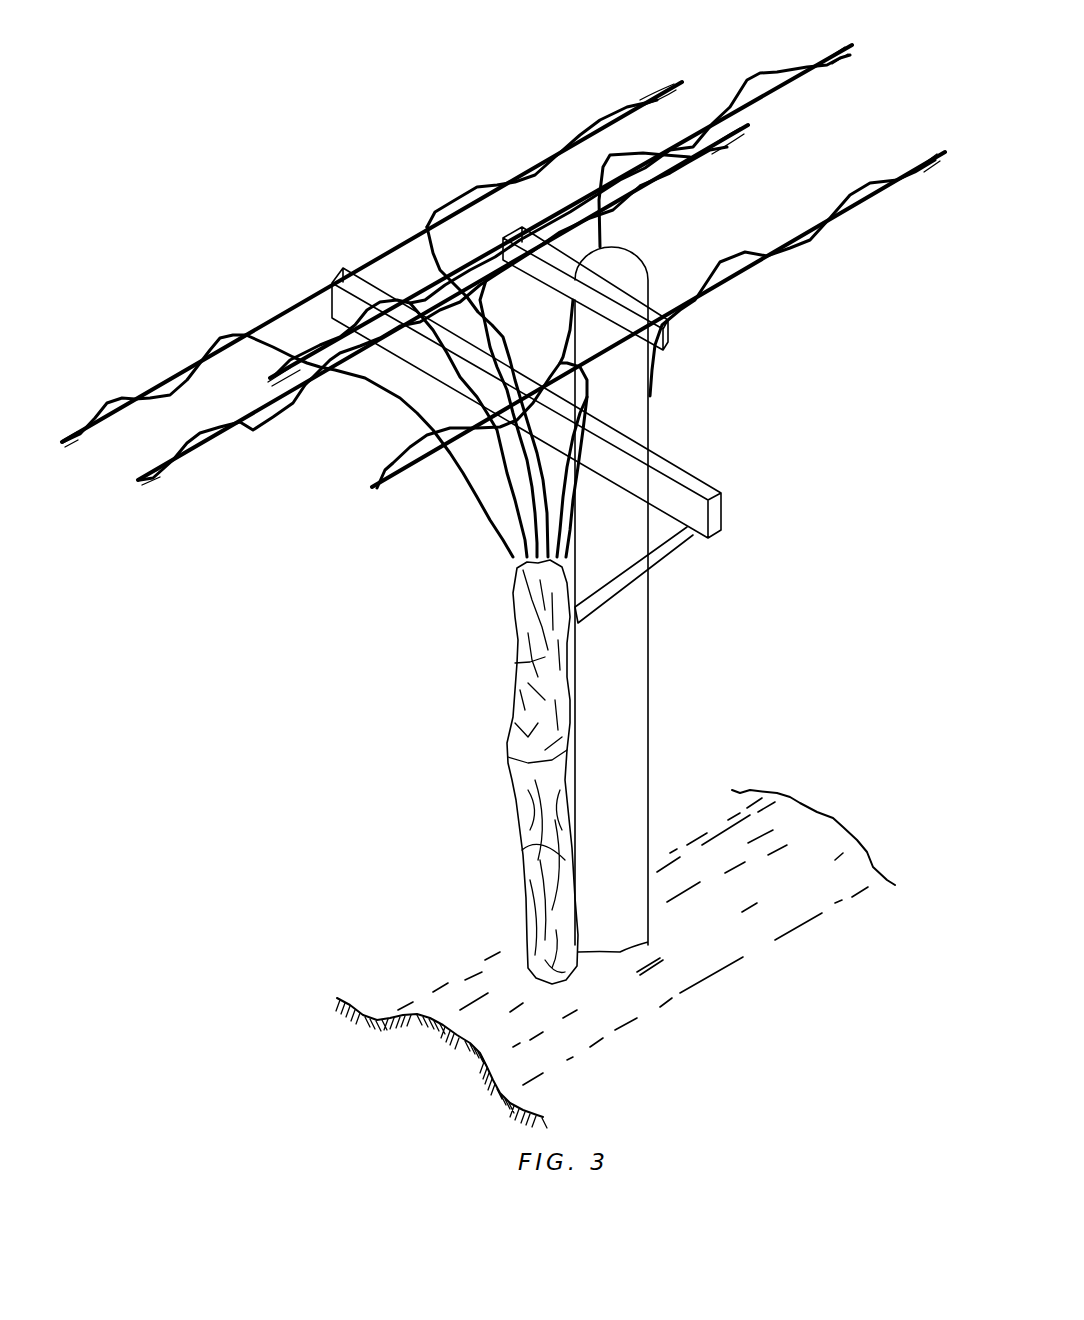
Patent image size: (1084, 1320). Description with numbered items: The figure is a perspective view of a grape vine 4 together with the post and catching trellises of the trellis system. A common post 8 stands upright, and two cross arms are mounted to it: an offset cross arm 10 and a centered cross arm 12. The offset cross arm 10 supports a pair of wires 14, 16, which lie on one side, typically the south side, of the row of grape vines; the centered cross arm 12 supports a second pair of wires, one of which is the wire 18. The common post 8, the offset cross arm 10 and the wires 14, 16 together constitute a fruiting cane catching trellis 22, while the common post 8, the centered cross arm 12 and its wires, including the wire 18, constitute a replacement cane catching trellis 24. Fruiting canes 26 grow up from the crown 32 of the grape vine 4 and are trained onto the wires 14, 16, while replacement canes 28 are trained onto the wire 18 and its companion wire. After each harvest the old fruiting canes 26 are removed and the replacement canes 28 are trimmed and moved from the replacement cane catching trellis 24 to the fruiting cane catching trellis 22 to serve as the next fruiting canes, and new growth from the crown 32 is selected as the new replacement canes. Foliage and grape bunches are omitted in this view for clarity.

The grape vine 4 is at (460, 830).
The common post 8 is at (649, 648).
The offset cross arm 10 is at (663, 462).
The centered cross arm 12 is at (648, 300).
The wire 14 is at (393, 246).
The wire 16 is at (495, 304).
The wire 18 is at (770, 97).
The fruiting cane catching trellis 22 is at (304, 278).
The replacement cane catching trellis 24 is at (718, 354).
The fruiting cane 26 is at (588, 123).
The replacement cane 28 is at (763, 70).
The crown 32 is at (523, 651).